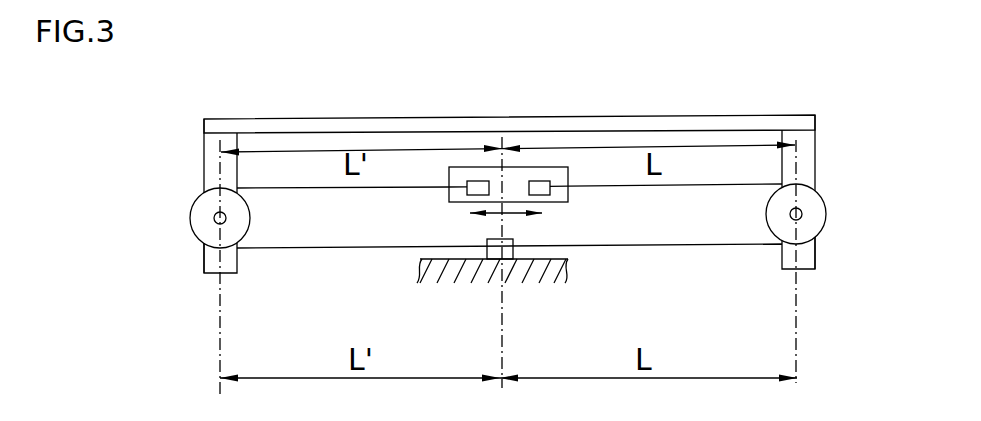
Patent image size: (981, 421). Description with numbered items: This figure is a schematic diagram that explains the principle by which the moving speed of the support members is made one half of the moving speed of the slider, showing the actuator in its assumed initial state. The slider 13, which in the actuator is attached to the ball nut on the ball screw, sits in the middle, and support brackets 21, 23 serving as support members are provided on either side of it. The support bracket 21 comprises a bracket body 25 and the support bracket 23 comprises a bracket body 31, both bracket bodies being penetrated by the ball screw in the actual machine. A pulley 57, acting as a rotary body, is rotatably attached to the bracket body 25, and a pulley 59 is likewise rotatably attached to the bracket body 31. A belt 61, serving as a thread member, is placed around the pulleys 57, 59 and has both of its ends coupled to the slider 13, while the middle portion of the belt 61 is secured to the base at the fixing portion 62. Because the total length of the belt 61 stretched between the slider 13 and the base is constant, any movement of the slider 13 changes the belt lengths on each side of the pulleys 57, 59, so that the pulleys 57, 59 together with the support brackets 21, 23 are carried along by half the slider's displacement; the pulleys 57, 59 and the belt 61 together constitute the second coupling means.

The slider 13 is at (504, 167).
The support bracket 21 is at (205, 161).
The support bracket 23 is at (818, 170).
The bracket body 25 is at (203, 262).
The bracket body 31 is at (812, 257).
The pulley 57 is at (202, 213).
The pulley 59 is at (822, 214).
The belt 61 is at (702, 246).
The fixing portion 62 is at (490, 262).